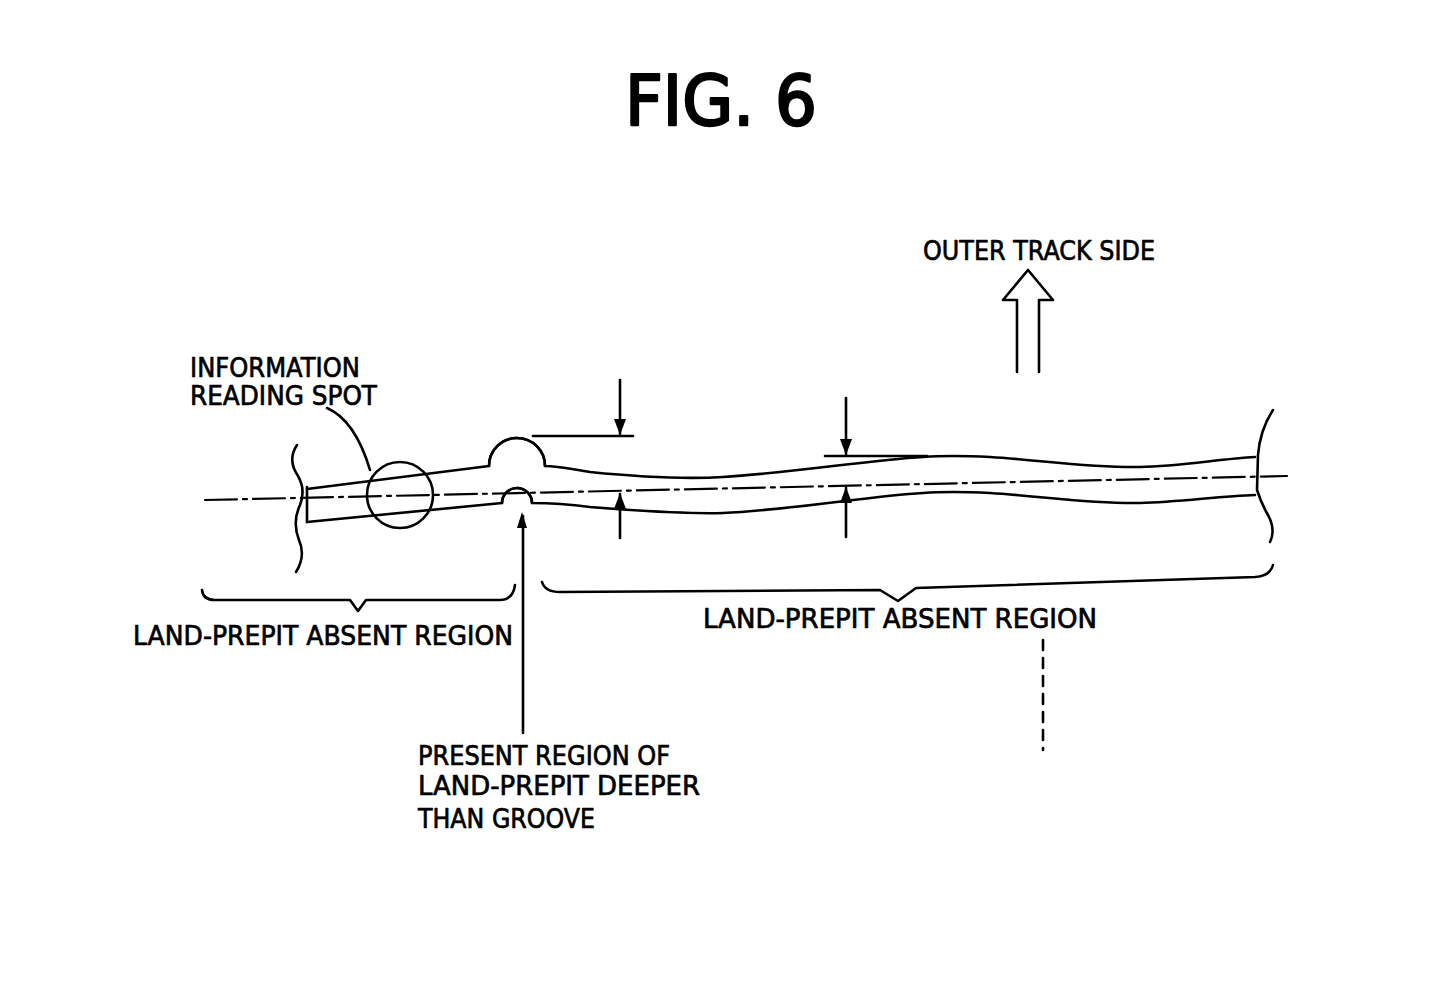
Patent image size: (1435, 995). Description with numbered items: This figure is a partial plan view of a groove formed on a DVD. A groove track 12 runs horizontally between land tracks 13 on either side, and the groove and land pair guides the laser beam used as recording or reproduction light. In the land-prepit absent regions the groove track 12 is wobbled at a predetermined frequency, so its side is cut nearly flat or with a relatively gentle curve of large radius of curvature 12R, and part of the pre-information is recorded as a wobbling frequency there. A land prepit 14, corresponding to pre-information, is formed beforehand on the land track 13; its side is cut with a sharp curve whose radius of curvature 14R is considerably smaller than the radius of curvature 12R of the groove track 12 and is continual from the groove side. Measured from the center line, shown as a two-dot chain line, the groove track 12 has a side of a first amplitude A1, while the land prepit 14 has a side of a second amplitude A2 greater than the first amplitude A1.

The groove track 12 is at (337, 510).
The radius of curvature of the groove track 12R is at (747, 474).
The land track 13 is at (1259, 428).
The land prepit 14 is at (518, 429).
The radius of curvature of the land prepit 14R is at (522, 475).
The first amplitude A1 is at (876, 453).
The second amplitude A2 is at (586, 443).